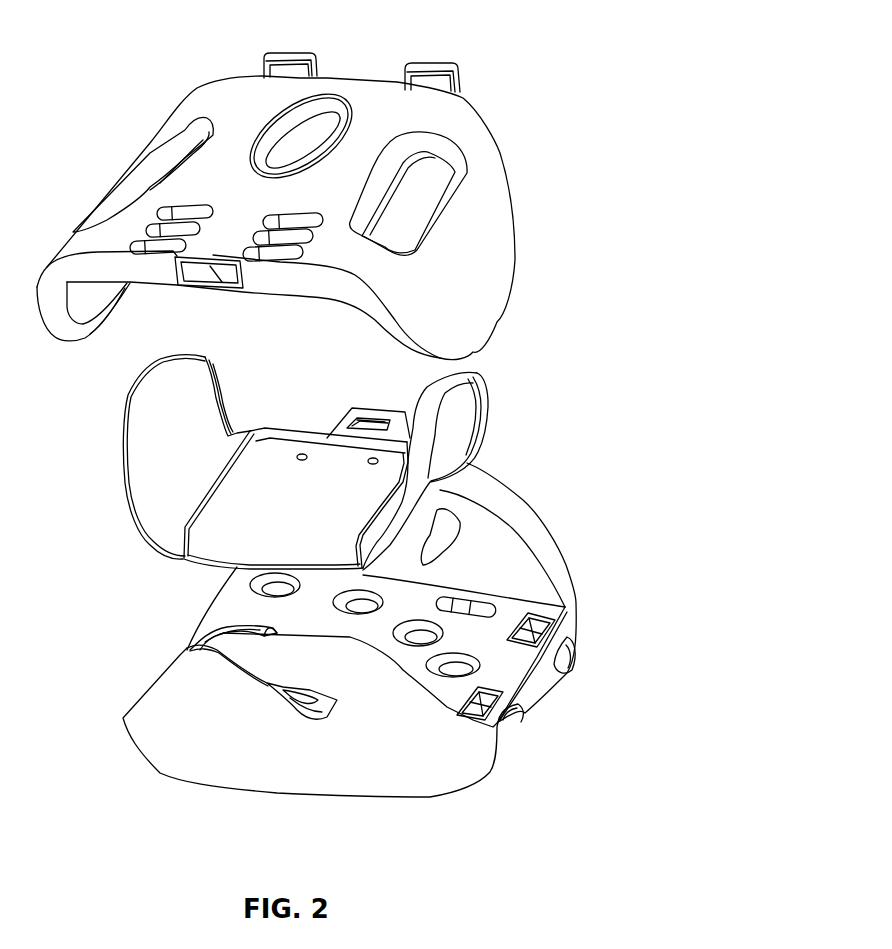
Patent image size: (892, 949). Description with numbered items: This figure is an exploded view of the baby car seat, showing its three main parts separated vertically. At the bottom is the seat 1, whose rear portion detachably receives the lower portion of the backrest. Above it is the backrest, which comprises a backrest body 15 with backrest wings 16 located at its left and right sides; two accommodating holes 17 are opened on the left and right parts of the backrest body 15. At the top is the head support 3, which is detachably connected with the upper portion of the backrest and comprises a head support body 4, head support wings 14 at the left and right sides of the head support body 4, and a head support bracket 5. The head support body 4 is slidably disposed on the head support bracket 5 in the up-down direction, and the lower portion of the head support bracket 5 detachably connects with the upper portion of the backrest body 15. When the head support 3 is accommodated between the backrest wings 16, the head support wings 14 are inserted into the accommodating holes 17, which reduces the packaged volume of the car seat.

The seat 1 is at (258, 807).
The head support 3 is at (305, 494).
The head support body 4 is at (200, 573).
The head support bracket 5 is at (333, 440).
The head support wing 14 is at (157, 430).
The backrest body 15 is at (335, 80).
The backrest wing 16 is at (483, 307).
The accommodating hole 17 is at (170, 153).